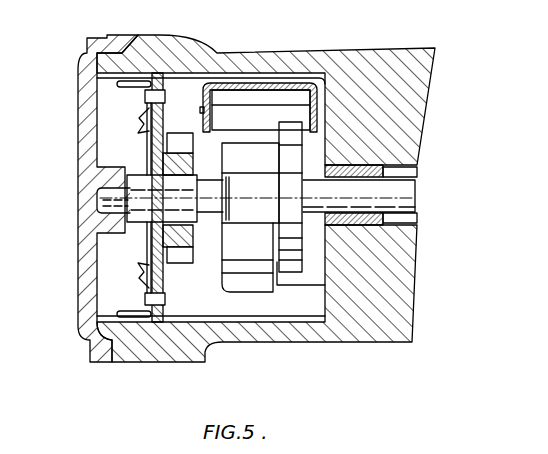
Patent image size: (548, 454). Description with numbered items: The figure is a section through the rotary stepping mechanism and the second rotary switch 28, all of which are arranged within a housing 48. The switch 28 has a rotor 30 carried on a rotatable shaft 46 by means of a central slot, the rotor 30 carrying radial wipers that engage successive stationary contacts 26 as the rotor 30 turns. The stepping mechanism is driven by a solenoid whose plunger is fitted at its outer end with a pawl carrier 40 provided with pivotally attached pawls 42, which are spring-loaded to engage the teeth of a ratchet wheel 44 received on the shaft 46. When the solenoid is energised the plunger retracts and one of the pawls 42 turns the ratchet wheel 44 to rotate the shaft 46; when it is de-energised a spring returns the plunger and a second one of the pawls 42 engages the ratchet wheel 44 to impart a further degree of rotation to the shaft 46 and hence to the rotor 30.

The stationary contact 26 is at (117, 84).
The second rotary switch 28 is at (163, 281).
The rotor 30 is at (147, 153).
The pawl carrier 40 is at (262, 86).
The pawls 42 is at (292, 113).
The ratchet wheel 44 is at (287, 157).
The rotatable shaft 46 is at (400, 189).
The housing 48 is at (88, 243).